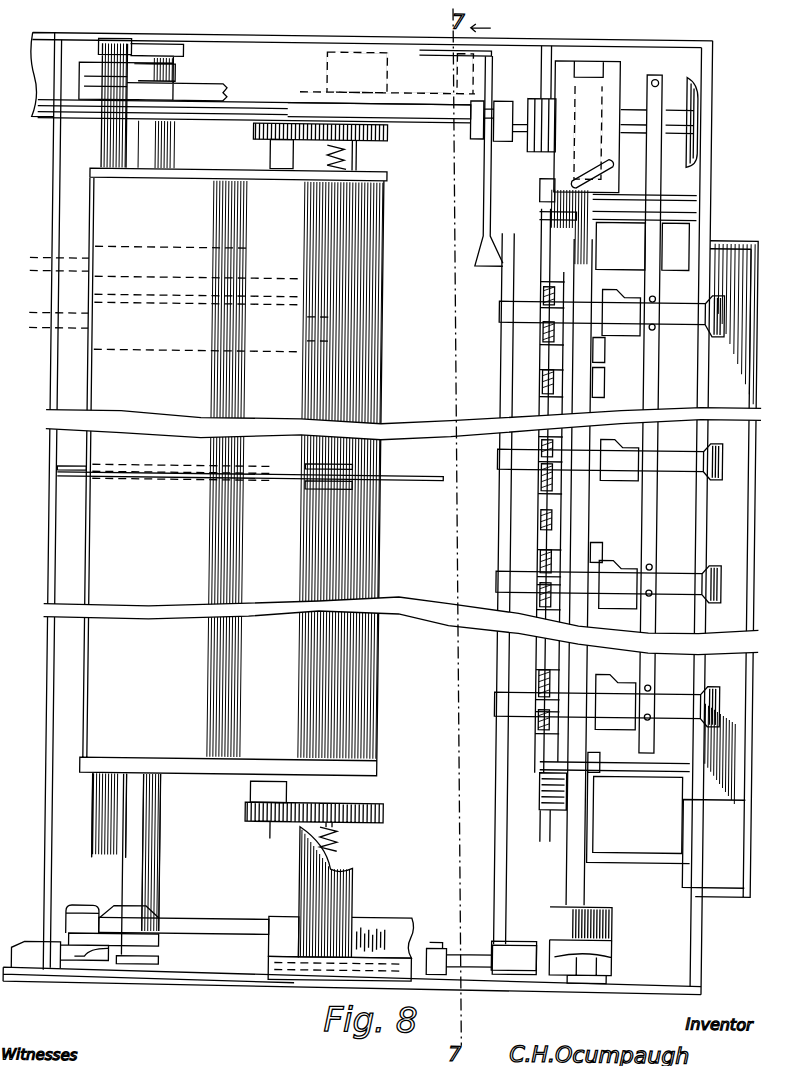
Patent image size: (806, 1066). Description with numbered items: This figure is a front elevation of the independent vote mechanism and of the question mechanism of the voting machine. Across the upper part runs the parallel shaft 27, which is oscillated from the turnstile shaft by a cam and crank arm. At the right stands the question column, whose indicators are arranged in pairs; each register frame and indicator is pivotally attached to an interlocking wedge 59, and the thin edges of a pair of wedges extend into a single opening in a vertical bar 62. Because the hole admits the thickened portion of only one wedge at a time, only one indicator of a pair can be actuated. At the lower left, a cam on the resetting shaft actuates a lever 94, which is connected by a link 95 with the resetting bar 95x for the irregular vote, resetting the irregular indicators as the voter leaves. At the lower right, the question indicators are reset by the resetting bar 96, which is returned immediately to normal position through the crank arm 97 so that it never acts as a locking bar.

The parallel shaft 27 is at (428, 127).
The interlocking wedge 59 is at (628, 478).
The vertical bar 62 is at (667, 542).
The lever 94 is at (156, 909).
The link 95 is at (215, 913).
The resetting bar 95x is at (358, 909).
The question-indicators-resetting bar 96 is at (617, 920).
The crank arm 97 is at (617, 955).